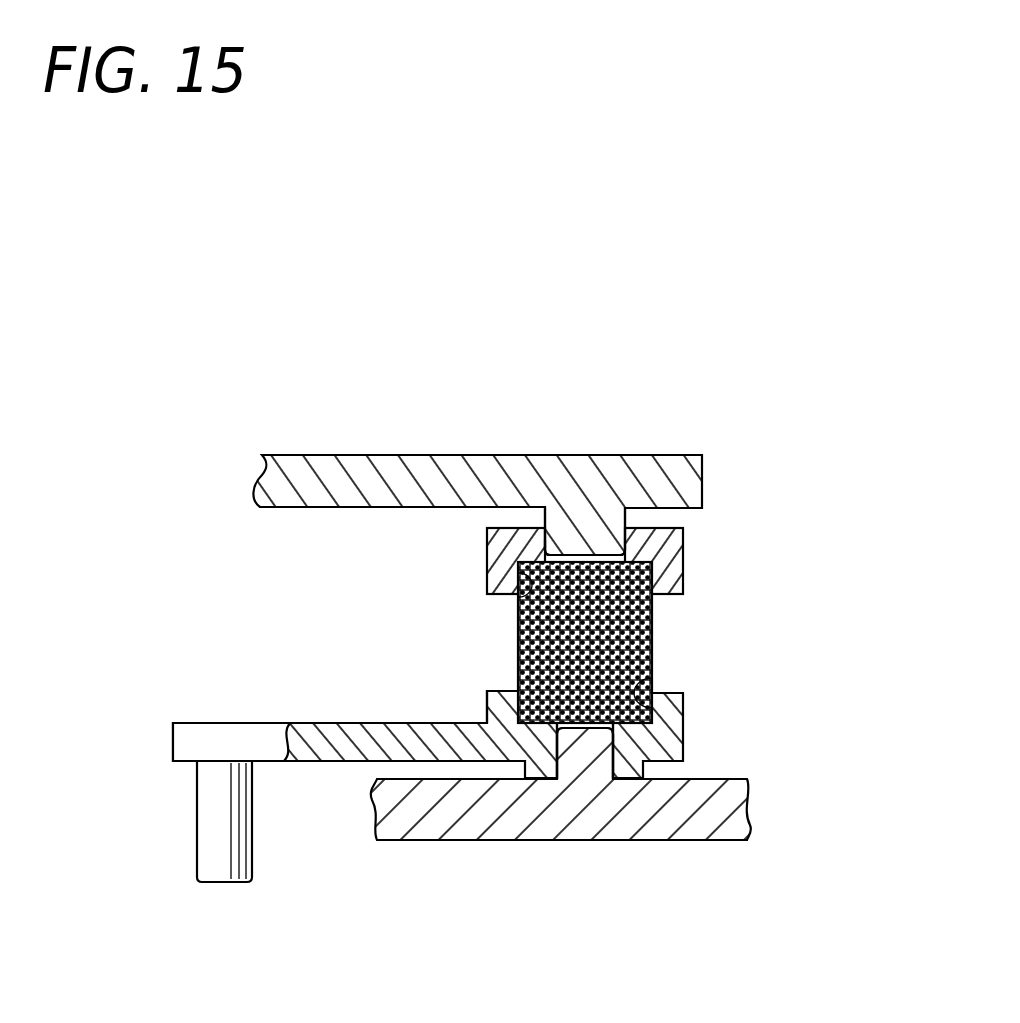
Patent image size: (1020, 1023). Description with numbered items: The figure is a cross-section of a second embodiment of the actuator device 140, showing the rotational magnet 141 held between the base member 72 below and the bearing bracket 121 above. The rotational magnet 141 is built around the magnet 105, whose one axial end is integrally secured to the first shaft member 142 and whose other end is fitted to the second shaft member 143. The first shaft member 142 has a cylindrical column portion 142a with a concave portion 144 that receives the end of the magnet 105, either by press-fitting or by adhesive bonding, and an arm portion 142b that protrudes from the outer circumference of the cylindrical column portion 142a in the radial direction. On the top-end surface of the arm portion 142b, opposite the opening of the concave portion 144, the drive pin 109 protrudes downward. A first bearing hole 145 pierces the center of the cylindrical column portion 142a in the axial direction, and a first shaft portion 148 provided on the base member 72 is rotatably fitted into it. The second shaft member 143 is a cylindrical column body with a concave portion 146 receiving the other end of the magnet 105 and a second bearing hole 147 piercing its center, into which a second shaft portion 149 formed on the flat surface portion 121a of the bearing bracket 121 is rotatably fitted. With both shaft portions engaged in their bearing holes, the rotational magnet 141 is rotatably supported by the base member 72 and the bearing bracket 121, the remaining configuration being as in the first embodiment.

The base member 72 is at (417, 820).
The magnet 105 is at (627, 638).
The drive pin 109 is at (218, 862).
The bearing bracket 121 is at (322, 468).
The flat surface portion 121a is at (655, 468).
The actuator device 140 is at (529, 731).
The rotational magnet 141 is at (708, 570).
The first shaft member 142 is at (715, 738).
The cylindrical column portion 142a is at (487, 697).
The arm portion 142b is at (216, 740).
The second shaft member 143 is at (705, 530).
The concave portion 144 is at (652, 680).
The first bearing hole 145 is at (567, 738).
The concave portion 146 is at (520, 599).
The second bearing hole 147 is at (560, 540).
The first shaft portion 148 is at (596, 745).
The second shaft portion 149 is at (587, 550).